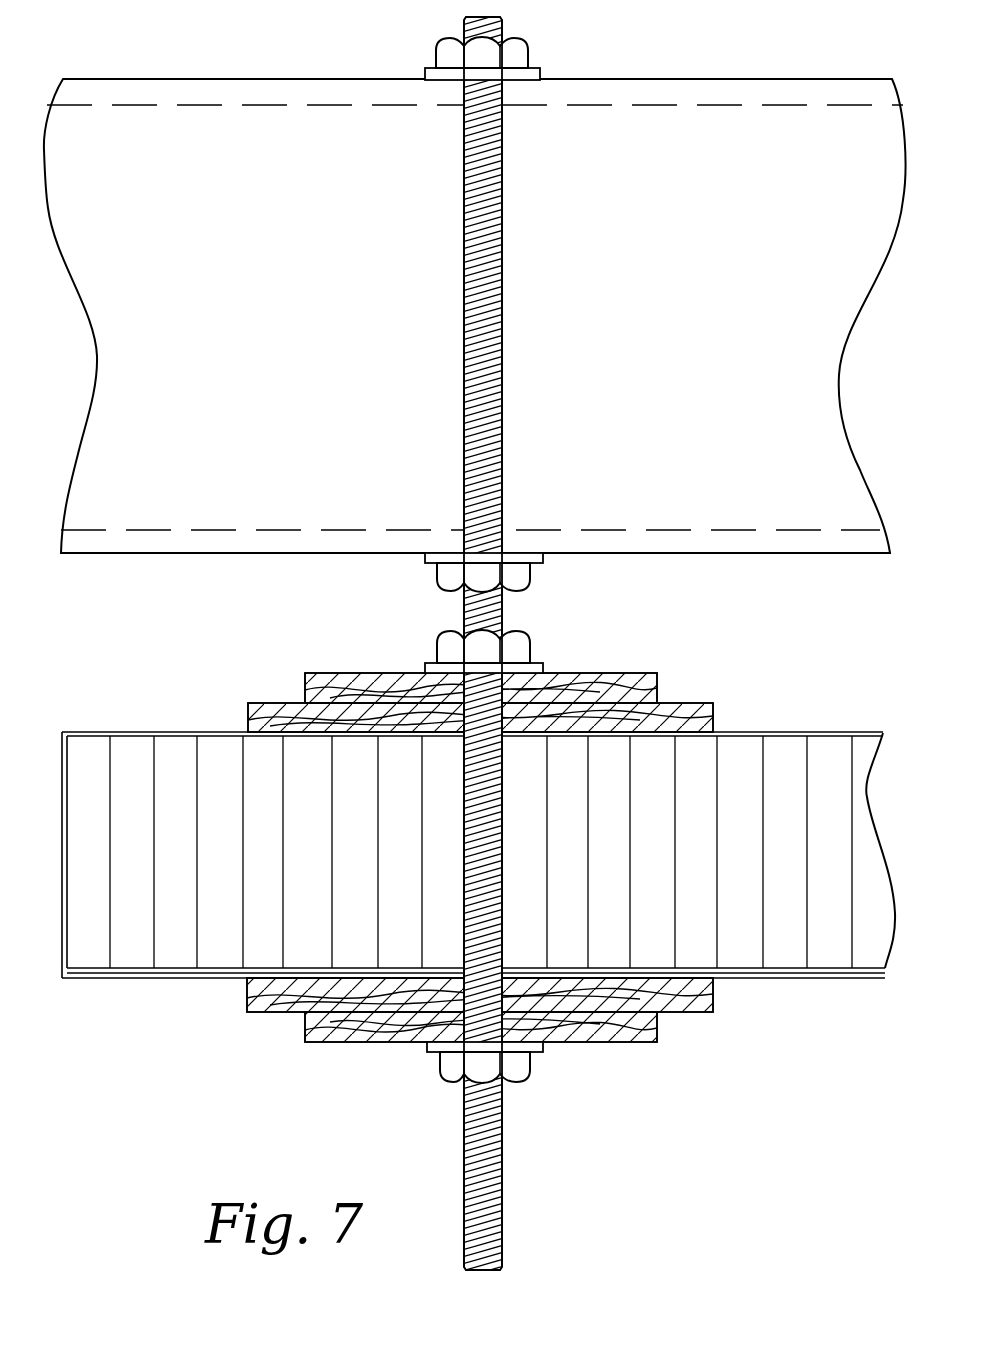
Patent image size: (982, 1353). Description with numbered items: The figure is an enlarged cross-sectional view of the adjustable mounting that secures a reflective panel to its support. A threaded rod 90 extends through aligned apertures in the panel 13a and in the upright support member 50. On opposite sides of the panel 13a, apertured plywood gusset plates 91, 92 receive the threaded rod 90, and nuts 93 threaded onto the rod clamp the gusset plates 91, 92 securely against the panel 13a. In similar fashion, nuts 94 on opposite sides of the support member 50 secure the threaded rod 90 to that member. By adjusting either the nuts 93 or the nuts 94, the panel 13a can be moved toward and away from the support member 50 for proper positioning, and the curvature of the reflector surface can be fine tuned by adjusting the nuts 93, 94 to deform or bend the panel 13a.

The upright member 50 is at (780, 543).
The individual panel 13a is at (812, 986).
The threaded rod 90 is at (498, 628).
The plywood gusset plate 91 is at (715, 717).
The plywood gusset plate 92 is at (658, 688).
The nut 93 is at (518, 650).
The nut 94 is at (513, 55).